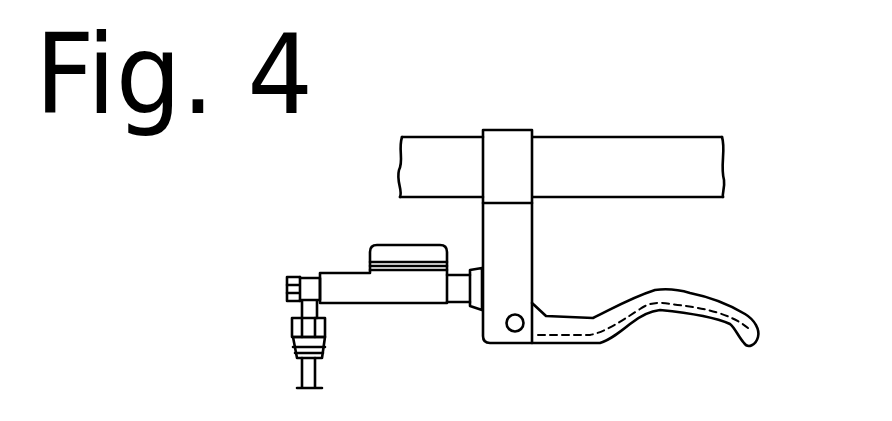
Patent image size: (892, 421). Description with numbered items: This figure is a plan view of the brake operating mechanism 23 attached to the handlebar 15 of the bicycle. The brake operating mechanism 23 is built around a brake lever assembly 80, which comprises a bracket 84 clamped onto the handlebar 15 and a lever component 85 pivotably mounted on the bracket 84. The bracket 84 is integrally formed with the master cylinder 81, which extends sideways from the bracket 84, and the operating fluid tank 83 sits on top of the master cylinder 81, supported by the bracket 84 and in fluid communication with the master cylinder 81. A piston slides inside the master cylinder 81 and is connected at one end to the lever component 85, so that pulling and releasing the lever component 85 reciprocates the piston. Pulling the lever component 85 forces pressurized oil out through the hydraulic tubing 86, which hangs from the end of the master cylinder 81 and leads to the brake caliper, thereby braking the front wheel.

The handlebar 15 is at (657, 137).
The brake operating mechanism 23 is at (586, 109).
The brake lever assembly 80 is at (650, 330).
The master cylinder 81 is at (357, 305).
The operating fluid tank 83 is at (370, 250).
The bracket 84 is at (533, 247).
The lever component 85 is at (647, 290).
The hydraulic tubing 86 is at (318, 380).